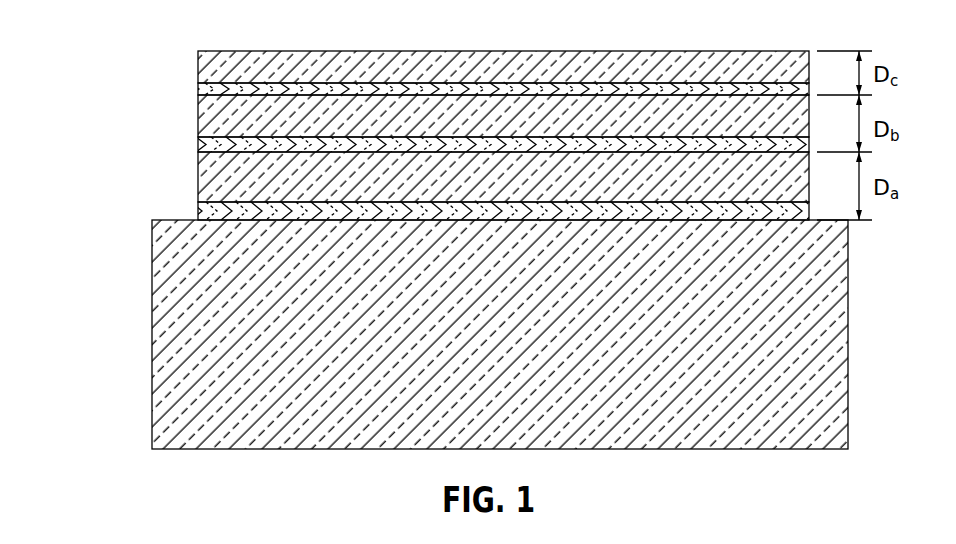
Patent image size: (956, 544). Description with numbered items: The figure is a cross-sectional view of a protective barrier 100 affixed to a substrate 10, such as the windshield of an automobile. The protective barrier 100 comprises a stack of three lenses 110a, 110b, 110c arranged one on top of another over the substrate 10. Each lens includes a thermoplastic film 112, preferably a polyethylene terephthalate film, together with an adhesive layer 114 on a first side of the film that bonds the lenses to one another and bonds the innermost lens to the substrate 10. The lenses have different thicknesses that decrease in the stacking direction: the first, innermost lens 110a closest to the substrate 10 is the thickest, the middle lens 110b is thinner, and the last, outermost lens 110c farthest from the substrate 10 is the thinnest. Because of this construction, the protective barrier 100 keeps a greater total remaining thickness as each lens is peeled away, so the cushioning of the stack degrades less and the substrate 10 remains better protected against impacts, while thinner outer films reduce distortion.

The substrate 10 is at (172, 307).
The protective barrier 100 is at (416, 111).
The first lens 110a is at (453, 111).
The second lens 110b is at (175, 97).
The last lens 110c is at (175, 45).
The thermoplastic film 112 is at (726, 163).
The adhesive layer 114 is at (638, 211).